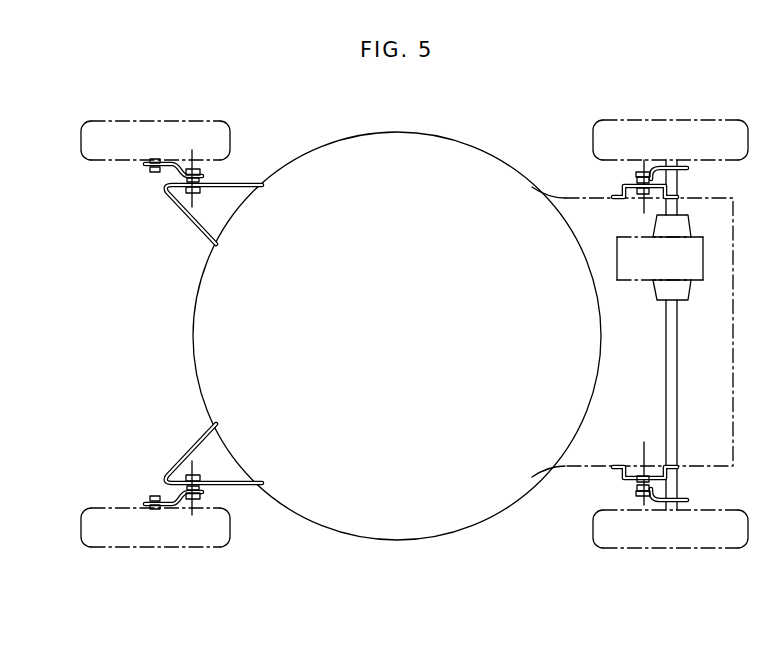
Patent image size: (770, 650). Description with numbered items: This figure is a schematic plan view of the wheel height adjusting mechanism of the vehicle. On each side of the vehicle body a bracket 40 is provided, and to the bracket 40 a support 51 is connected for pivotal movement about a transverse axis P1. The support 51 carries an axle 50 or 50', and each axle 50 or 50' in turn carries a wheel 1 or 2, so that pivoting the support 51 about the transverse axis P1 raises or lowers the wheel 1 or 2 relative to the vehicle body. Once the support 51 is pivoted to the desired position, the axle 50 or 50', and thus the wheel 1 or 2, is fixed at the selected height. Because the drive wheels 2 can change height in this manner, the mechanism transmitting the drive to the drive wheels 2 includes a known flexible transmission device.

The wheel 1 is at (196, 121).
The drive wheel 2 is at (607, 121).
The bracket 40 is at (234, 184).
The axle 50 is at (632, 335).
The axle 50' is at (153, 334).
The support 51 is at (150, 163).
The transverse axis P1 is at (186, 204).